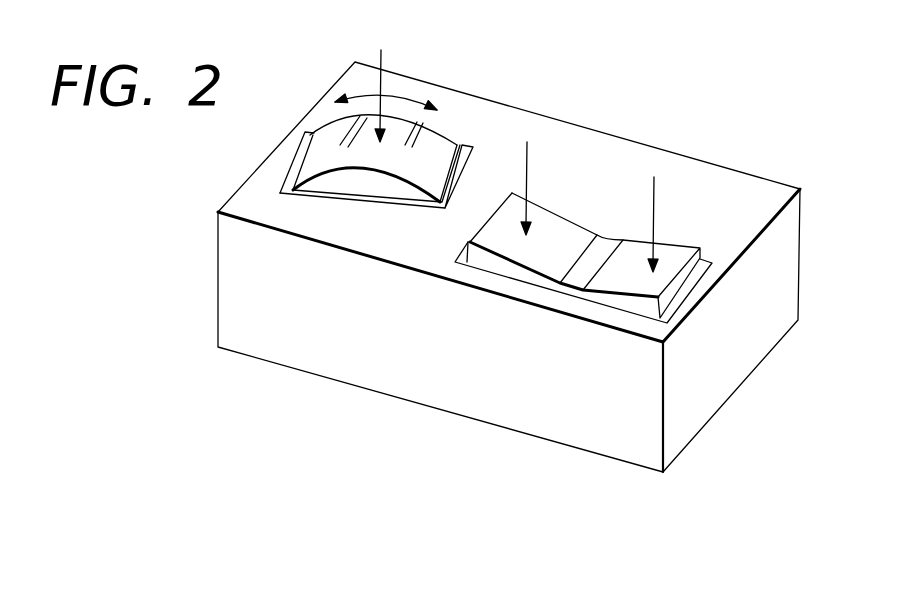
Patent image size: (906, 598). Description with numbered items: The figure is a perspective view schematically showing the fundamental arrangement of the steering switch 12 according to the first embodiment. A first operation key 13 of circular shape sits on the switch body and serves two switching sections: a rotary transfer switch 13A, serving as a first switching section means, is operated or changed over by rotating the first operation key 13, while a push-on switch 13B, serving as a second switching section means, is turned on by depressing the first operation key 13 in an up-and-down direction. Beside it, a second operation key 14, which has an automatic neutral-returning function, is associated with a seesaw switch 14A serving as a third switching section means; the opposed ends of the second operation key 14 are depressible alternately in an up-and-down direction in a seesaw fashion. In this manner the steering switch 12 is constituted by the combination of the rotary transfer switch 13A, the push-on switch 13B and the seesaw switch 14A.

The steering switch 12 is at (367, 365).
The first operation key 13 is at (357, 185).
The rotary transfer switch 13A is at (363, 93).
The push-on switch 13B is at (382, 67).
The second operation key 14 is at (628, 277).
The seesaw switch 14A is at (655, 217).